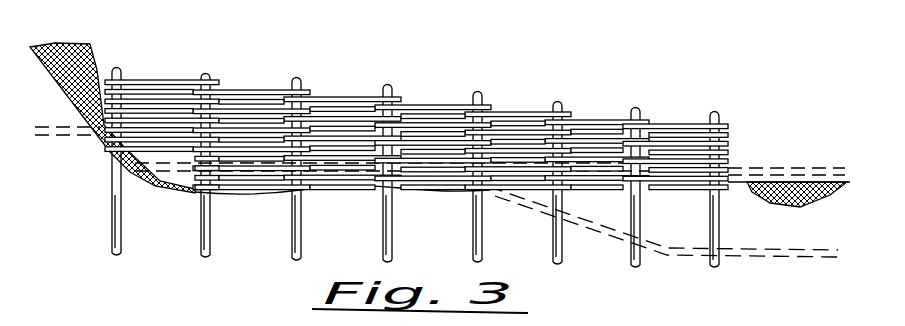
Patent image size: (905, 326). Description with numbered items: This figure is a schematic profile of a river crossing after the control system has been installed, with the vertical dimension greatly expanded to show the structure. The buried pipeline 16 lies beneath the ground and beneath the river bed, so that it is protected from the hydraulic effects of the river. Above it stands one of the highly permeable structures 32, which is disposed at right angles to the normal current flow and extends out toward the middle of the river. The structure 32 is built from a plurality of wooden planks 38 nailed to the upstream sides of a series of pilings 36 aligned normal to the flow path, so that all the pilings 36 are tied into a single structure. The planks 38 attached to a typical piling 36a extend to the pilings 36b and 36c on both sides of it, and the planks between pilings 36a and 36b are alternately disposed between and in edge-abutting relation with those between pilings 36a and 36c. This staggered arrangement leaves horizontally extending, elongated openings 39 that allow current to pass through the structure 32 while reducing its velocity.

The pipeline 16 is at (688, 257).
The permeable structure 32 is at (429, 154).
The piling 36 is at (118, 67).
The piling 36a is at (391, 86).
The piling 36b is at (300, 78).
The piling 36c is at (481, 94).
The wooden plank 38 is at (170, 108).
The opening 39 is at (253, 121).